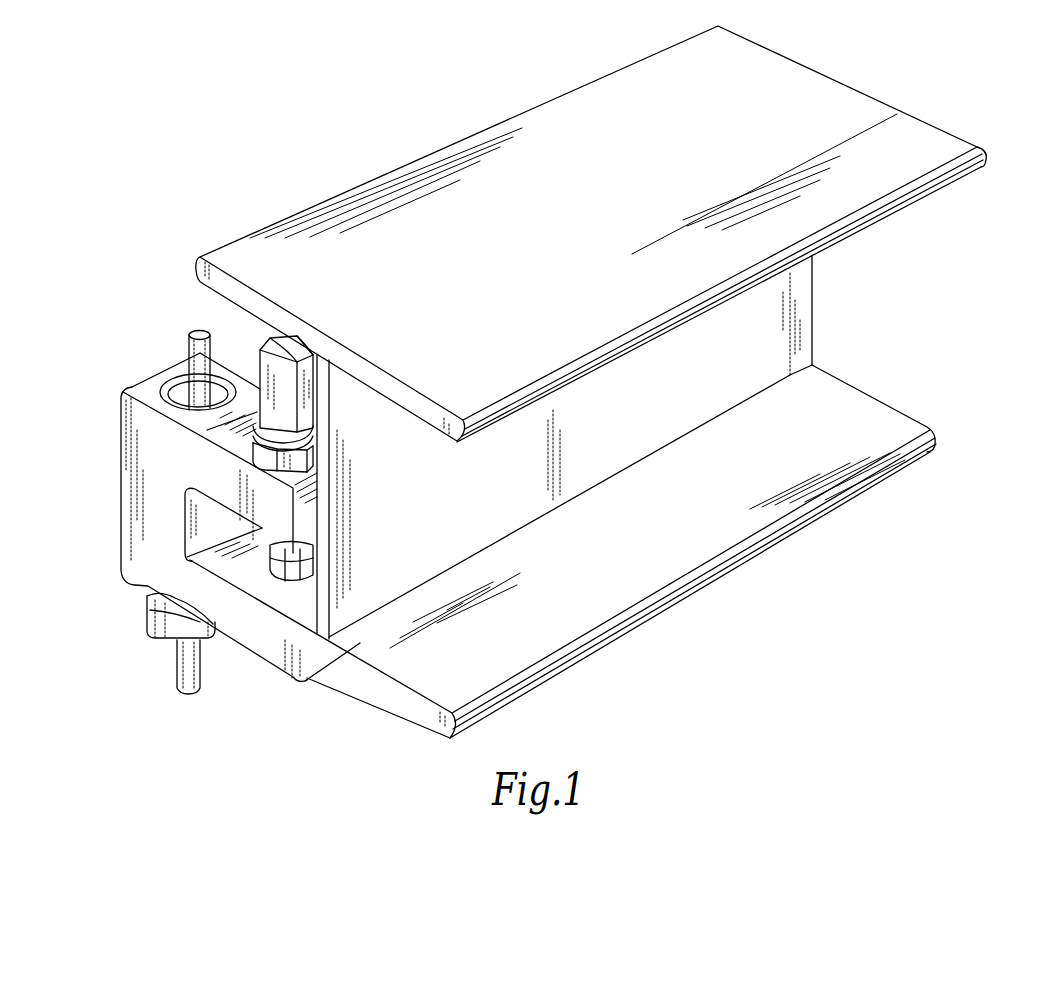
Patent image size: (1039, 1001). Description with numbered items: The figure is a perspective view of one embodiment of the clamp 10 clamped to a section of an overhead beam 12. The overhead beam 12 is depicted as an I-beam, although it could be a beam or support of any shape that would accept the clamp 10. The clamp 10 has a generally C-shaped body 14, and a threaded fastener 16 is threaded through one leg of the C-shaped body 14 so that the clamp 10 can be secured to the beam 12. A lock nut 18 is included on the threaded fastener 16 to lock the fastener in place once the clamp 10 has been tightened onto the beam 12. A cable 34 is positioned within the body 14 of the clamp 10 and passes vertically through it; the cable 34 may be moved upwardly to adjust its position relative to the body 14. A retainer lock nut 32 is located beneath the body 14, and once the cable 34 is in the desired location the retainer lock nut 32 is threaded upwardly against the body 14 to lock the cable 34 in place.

The clamp 10 is at (112, 372).
The overhead beam 12 is at (560, 236).
The "C" shaped body 14 is at (155, 473).
The threaded fastener 16 is at (260, 352).
The lock nut 18 is at (207, 430).
The retainer lock nut 32 is at (168, 626).
The cable 34 is at (190, 343).